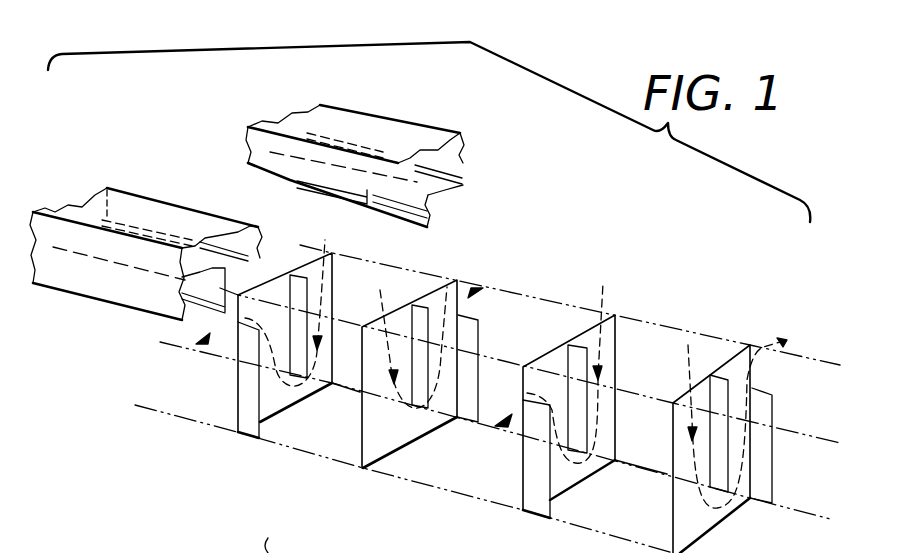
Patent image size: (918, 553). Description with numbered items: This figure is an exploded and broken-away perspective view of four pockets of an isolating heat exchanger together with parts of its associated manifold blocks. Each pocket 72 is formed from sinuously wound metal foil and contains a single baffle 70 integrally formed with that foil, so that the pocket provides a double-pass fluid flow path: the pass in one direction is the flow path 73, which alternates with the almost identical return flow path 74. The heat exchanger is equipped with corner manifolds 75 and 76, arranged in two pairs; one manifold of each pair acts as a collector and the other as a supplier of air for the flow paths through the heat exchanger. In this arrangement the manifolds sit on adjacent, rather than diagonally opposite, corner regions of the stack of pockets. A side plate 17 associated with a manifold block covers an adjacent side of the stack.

The side plate 17 is at (285, 534).
The baffle 70 is at (297, 295).
The pocket 72 is at (494, 403).
The flow path pass 73 is at (312, 312).
The flow path 74 is at (482, 312).
The corner manifold 75 is at (87, 287).
The corner manifold 76 is at (127, 203).